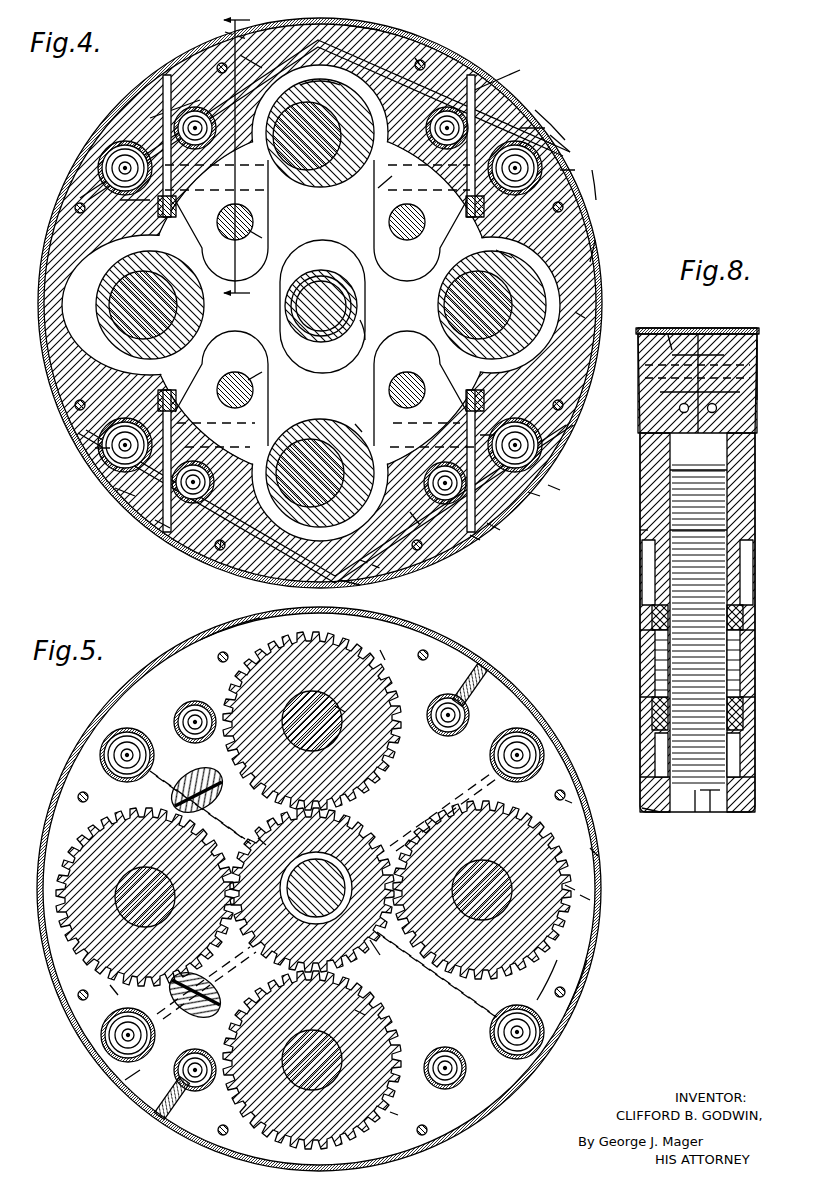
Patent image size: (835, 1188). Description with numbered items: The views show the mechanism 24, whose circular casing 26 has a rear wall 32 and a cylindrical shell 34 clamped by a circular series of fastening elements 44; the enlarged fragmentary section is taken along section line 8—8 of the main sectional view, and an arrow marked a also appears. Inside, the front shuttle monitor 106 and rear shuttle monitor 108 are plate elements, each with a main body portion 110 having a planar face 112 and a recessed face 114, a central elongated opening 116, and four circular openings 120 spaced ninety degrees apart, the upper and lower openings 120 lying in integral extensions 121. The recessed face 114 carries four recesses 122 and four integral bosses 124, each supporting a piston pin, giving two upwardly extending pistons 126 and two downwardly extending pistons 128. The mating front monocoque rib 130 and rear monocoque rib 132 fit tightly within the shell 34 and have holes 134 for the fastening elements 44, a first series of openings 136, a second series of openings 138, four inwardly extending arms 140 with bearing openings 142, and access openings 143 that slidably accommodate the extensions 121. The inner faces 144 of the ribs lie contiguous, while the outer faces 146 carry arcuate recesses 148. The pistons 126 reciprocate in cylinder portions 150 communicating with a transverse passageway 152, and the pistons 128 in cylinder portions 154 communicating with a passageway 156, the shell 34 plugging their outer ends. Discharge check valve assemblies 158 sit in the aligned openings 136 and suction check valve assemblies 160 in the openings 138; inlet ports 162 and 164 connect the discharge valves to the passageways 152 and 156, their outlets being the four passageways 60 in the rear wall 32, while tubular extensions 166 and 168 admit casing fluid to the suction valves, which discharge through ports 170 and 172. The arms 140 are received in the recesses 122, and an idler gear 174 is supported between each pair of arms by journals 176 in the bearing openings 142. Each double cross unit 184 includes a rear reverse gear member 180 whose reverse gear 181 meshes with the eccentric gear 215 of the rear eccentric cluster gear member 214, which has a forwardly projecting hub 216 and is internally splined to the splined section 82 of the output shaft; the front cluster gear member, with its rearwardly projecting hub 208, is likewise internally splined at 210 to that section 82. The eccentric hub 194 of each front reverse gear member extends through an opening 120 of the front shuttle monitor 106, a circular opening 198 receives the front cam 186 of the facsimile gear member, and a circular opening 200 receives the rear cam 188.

In FIG. 4, the section line 8— 8 is at (238, 157).
In FIG. 4, the mechanism 24 is at (497, 60).
In FIG. 5, the mechanism 24 is at (594, 982).
In FIG. 4, the circular casing 26 is at (598, 196).
In FIG. 5, the circular casing 26 is at (603, 940).
In FIG. 8, the circular casing 26 is at (750, 326).
In FIG. 5, the rear wall 32 is at (590, 852).
In FIG. 4, the cylindrical shell 34 is at (523, 106).
In FIG. 5, the cylindrical shell 34 is at (228, 630).
In FIG. 8, the cylindrical shell 34 is at (718, 328).
In FIG. 4, the fastening elements 44 is at (218, 64).
In FIG. 5, the fastening elements 44 is at (218, 658).
In FIG. 8, the fastening elements 44 is at (672, 350).
In FIG. 5, the passageways 60 is at (198, 778).
In FIG. 4, the splined section 82 is at (338, 272).
In FIG. 5, the splined section 82 is at (348, 905).
In FIG. 4, the front shuttle monitor 106 is at (590, 232).
In FIG. 8, the front shuttle monitor 106 is at (750, 815).
In FIG. 8, the rear shuttle monitor 108 is at (648, 815).
In FIG. 8, the main body portion 110 is at (648, 701).
In FIG. 8, the planar face 112 is at (648, 676).
In FIG. 4, the recessed face 114 is at (582, 315).
In FIG. 4, the elongated opening 116 is at (372, 318).
In FIG. 4, the circular openings 120 is at (380, 190).
In FIG. 4, the extensions 121 is at (360, 28).
In FIG. 4, the recesses 122 is at (345, 236).
In FIG. 8, the recesses 122 is at (656, 758).
In FIG. 4, the bosses 124 is at (167, 219).
In FIG. 4, the upwardly extending pistons 126 is at (535, 128).
In FIG. 4, the downwardly extending pistons 128 is at (98, 450).
In FIG. 4, the front monocoque rib 130 is at (592, 248).
In FIG. 8, the front monocoque rib 130 is at (757, 445).
In FIG. 8, the rear monocoque rib 132 is at (640, 530).
In FIG. 4, the holes 134 is at (420, 60).
In FIG. 5, the holes 134 is at (566, 799).
In FIG. 8, the holes 134 is at (656, 335).
In FIG. 4, the first series of circular openings 136 is at (120, 165).
In FIG. 4, the second series of circular openings 138 is at (208, 165).
In FIG. 4, the inwardly extending arms 140 is at (265, 206).
In FIG. 8, the inwardly extending arms 140 is at (660, 590).
In FIG. 4, the bearing opening 142 is at (258, 230).
In FIG. 8, the bearing opening 142 is at (656, 622).
In FIG. 4, the access openings 143 is at (240, 55).
In FIG. 8, the inner faces 144 is at (700, 355).
In FIG. 8, the outer faces 146 is at (660, 395).
In FIG. 4, the arcuate recesses 148 is at (240, 38).
In FIG. 4, the cylinder portions 150 is at (482, 114).
In FIG. 4, the fluid passageway 152 is at (150, 118).
In FIG. 8, the fluid passageway 152 is at (718, 408).
In FIG. 4, the cylinder portions 154 is at (155, 520).
In FIG. 4, the fluid passageway 156 is at (115, 488).
In FIG. 4, the discharge check valve assembly 158 is at (98, 170).
In FIG. 5, the discharge check valve assembly 158 is at (100, 748).
In FIG. 4, the suction check valve assembly 160 is at (185, 110).
In FIG. 5, the suction check valve assembly 160 is at (175, 718).
In FIG. 8, the suction check valve assembly 160 is at (712, 500).
In FIG. 4, the inlet ports 162 is at (560, 135).
In FIG. 4, the inlet ports 164 is at (555, 485).
In FIG. 5, the tubular extensions 166 is at (488, 672).
In FIG. 5, the tubular extensions 168 is at (172, 1122).
In FIG. 4, the ports 170 is at (470, 95).
In FIG. 4, the ports 172 is at (475, 538).
In FIG. 8, the idler gear 174 is at (712, 812).
In FIG. 4, the journals 176 is at (235, 222).
In FIG. 8, the journals 176 is at (660, 646).
In FIG. 5, the rear reverse gear member 180 is at (285, 630).
In FIG. 5, the reverse gear 181 is at (368, 652).
In FIG. 5, the double cross unit 184 is at (380, 650).
In FIG. 4, the front cam 186 is at (345, 135).
In FIG. 5, the rear cam 188 is at (335, 706).
In FIG. 4, the eccentric hub 194 is at (350, 124).
In FIG. 4, the circular opening 198 is at (335, 140).
In FIG. 5, the circular opening 200 is at (340, 716).
In FIG. 4, the hub 208 is at (286, 302).
In FIG. 4, the internal splines 210 is at (305, 335).
In FIG. 5, the rear eccentric cluster gear member 214 is at (365, 835).
In FIG. 5, the eccentric gear 215 is at (378, 950).
In FIG. 5, the hub 216 is at (262, 840).
In FIG. 4, the rotation direction a is at (80, 150).
In FIG. 5, the rotation direction a is at (183, 626).